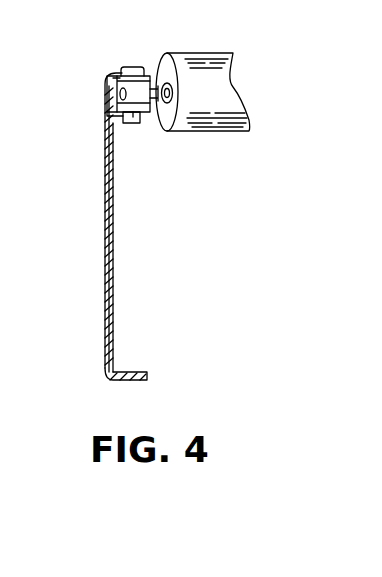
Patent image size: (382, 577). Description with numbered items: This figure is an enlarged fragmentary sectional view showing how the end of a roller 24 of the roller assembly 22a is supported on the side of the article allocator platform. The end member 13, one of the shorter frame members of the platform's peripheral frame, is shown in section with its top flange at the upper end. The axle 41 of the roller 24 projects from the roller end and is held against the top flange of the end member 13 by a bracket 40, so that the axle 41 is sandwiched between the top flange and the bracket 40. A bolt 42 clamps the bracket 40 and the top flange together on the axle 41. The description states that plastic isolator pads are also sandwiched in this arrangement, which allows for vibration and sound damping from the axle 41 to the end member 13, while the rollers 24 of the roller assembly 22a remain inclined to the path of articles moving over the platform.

The end member 13 is at (113, 265).
The bracket 40 is at (83, 88).
The bolt 42 is at (128, 66).
The axle 41 is at (153, 116).
The roller assembly 22a is at (210, 94).
The roller 24 is at (203, 133).